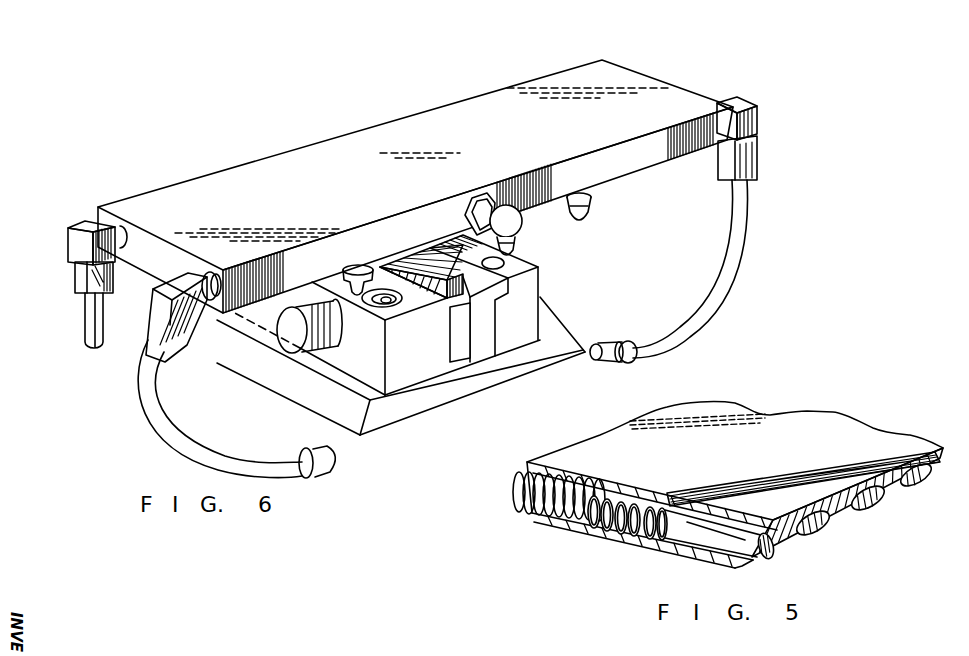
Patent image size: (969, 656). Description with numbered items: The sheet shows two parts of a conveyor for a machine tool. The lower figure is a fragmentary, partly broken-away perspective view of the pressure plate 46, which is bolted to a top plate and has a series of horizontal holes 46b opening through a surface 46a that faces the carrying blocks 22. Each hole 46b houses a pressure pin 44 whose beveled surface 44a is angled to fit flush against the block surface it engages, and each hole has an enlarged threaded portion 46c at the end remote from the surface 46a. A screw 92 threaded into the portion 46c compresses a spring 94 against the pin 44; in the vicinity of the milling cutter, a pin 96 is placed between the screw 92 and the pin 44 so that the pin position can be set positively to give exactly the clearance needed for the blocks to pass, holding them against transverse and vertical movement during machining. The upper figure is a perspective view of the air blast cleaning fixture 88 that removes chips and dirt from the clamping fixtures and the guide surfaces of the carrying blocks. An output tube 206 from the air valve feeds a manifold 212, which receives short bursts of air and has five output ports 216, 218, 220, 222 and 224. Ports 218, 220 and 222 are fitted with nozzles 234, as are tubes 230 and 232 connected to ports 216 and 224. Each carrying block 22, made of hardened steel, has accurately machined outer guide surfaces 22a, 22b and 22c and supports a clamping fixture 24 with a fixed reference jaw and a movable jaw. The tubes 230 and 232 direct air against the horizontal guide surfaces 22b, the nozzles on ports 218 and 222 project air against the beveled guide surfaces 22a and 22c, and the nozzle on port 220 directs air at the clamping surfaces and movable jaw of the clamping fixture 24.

In FIG. 6, the cleaning fixture 88 is at (262, 122).
In FIG. 6, the manifold 212 is at (458, 102).
In FIG. 6, the output port 224 is at (742, 104).
In FIG. 6, the output tube 206 is at (86, 332).
In FIG. 6, the tube 232 is at (742, 244).
In FIG. 6, the output port 220 is at (480, 195).
In FIG. 6, the output port 222 is at (583, 196).
In FIG. 6, the nozzle 234 is at (514, 242).
In FIG. 6, the output port 216 is at (228, 268).
In FIG. 6, the tube 230 is at (139, 397).
In FIG. 6, the carrying block 22 is at (430, 371).
In FIG. 6, the outer guide surface 22a is at (567, 313).
In FIG. 6, the outer guide surface 22b is at (373, 434).
In FIG. 6, the outer guide surface 22c is at (327, 413).
In FIG. 6, the clamping fixture 24 is at (412, 315).
In FIG. 6, the output port 218 is at (371, 268).
In FIG. 5, the pressure plate 46 is at (742, 454).
In FIG. 5, the surface 46a is at (842, 512).
In FIG. 5, the horizontal hole 46b is at (628, 483).
In FIG. 5, the enlarged threaded portion 46c is at (543, 521).
In FIG. 5, the pressure pin 44 is at (652, 515).
In FIG. 5, the beveled surface 44a is at (753, 561).
In FIG. 5, the screw 92 is at (516, 494).
In FIG. 5, the spring 94 is at (607, 541).
In FIG. 5, the pin 96 is at (680, 493).